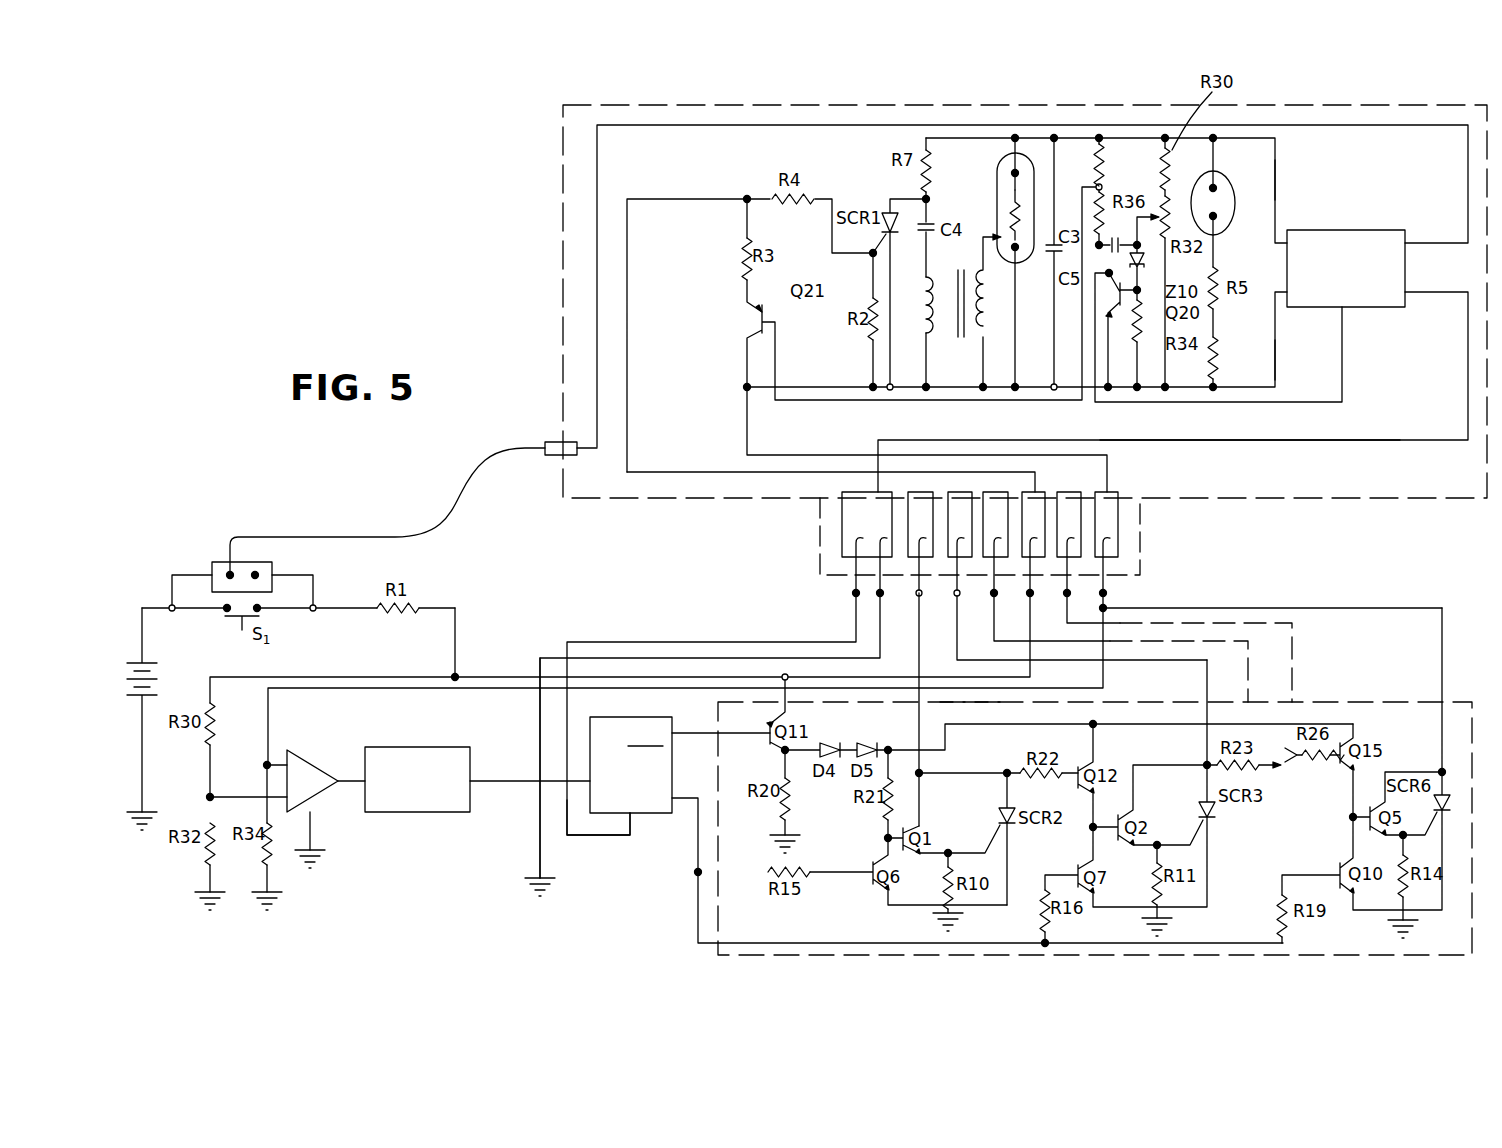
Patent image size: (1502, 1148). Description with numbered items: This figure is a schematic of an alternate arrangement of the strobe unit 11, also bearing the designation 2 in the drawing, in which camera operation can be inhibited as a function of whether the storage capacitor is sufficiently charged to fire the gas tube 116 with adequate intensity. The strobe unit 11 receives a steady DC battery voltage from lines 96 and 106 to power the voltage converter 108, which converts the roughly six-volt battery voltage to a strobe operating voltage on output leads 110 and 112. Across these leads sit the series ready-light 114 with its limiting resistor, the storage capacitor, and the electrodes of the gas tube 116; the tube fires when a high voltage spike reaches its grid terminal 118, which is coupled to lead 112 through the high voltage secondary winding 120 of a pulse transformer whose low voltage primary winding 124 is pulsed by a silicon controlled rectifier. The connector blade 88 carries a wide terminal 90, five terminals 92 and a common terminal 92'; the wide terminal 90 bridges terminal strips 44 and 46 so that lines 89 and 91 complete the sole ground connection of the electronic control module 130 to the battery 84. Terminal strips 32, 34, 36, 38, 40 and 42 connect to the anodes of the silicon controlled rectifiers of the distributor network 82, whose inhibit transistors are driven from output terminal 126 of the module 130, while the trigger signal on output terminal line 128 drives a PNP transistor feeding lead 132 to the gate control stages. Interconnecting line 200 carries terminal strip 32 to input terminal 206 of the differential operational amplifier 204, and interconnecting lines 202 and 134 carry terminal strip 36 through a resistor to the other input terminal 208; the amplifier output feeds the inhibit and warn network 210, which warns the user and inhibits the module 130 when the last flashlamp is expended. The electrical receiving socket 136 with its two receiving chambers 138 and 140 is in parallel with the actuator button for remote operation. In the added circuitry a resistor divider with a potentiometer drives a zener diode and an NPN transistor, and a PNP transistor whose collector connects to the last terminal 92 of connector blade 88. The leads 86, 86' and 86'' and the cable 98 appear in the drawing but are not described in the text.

The strobe unit 11 is at (1385, 110).
The strobe unit 2 is at (1423, 470).
The line 96 is at (940, 125).
The grid terminal 118 is at (998, 212).
The gas tube 116 is at (1035, 193).
The ready-light 114 is at (1222, 182).
The output terminal 110 is at (1275, 180).
The voltage converter 108 is at (1360, 307).
The output terminal 112 is at (1275, 365).
The line 106 is at (1265, 440).
The high voltage secondary winding 120 is at (985, 307).
The low voltage primary winding 124 is at (928, 312).
The wide terminal 90 is at (852, 504).
The terminal 92 is at (949, 472).
The common terminal 92' is at (845, 510).
The connector blade 88 is at (820, 522).
The terminal strip 46 is at (855, 543).
The terminal strip 32 is at (1118, 552).
The conductor 86 is at (1162, 636).
The conductor 86' is at (711, 714).
The conductor 86'' is at (710, 735).
The terminal strip 44 is at (893, 605).
The terminal strip 42 is at (932, 708).
The terminal strip 40 is at (969, 597).
The terminal strip 38 is at (1006, 607).
The terminal strip 36 is at (1044, 607).
The terminal strip 34 is at (1083, 607).
The interconnecting line 134 is at (478, 677).
The interconnecting line 200 is at (368, 686).
The interconnecting line 202 is at (300, 677).
The cable 98 is at (455, 498).
The electrical receiving socket 136 is at (239, 562).
The receiving chamber 138 is at (214, 568).
The receiving chamber 140 is at (266, 568).
The battery 84 is at (160, 676).
The input terminal 206 is at (272, 760).
The operational amplifier 204 is at (322, 760).
The input terminal 208 is at (311, 812).
The inhibit and warn network 210 is at (445, 812).
The line 91 is at (540, 736).
The electronic control module 130 is at (631, 765).
The line 89 is at (592, 835).
The output terminal line 128 is at (695, 733).
The output terminal 126 is at (690, 800).
The distributor network 82 is at (1424, 754).
The lead 132 is at (965, 703).